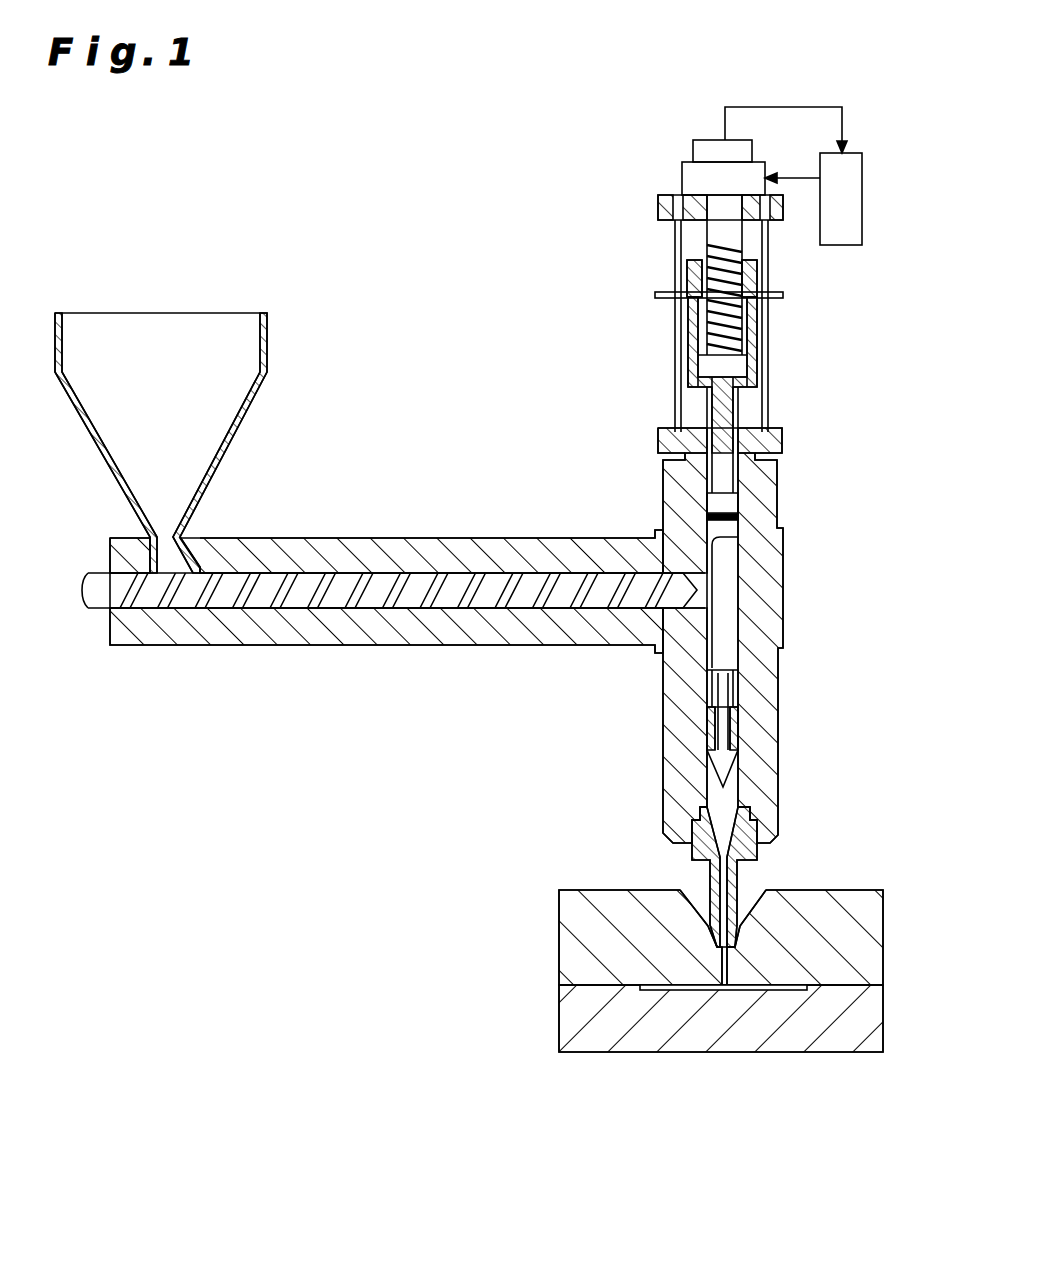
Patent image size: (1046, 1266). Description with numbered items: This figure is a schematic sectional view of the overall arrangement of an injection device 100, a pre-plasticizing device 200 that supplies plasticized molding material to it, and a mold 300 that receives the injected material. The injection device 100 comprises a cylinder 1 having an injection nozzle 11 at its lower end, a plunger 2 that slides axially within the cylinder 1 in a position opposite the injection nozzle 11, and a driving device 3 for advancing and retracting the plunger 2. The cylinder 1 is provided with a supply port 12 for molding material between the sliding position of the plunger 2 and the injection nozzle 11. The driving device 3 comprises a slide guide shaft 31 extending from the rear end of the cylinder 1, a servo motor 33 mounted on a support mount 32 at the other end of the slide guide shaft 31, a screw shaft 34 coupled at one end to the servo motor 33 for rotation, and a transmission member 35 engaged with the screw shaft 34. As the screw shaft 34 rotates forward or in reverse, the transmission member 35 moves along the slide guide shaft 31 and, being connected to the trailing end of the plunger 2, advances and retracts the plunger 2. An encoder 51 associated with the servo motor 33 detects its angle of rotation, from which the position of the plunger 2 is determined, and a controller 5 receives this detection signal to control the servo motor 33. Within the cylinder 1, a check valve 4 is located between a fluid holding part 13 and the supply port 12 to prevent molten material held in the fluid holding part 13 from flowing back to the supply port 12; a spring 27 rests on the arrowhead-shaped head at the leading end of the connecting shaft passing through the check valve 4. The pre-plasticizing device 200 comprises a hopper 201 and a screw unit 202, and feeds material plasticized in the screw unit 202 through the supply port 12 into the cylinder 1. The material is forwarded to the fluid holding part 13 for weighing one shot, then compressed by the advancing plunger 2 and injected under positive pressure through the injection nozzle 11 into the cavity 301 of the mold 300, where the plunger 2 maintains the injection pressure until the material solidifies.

The cylinder 1 is at (683, 737).
The plunger 2 is at (742, 614).
The driving device 3 is at (660, 176).
The check valve 4 is at (742, 684).
The controller 5 is at (845, 198).
The injection nozzle 11 is at (738, 893).
The supply port 12 is at (662, 520).
The fluid holding part 13 is at (747, 803).
The spring 27 is at (750, 736).
The slide guide shaft 31 is at (688, 347).
The support mount 32 is at (660, 205).
The servo motor 33 is at (758, 173).
The screw shaft 34 is at (742, 252).
The transmission member 35 is at (752, 285).
The encoder 51 is at (705, 148).
The injection device 100 is at (655, 497).
The pre-plasticizing device 200 is at (305, 535).
The hopper 201 is at (242, 345).
The screw unit 202 is at (408, 555).
The mold 300 is at (566, 885).
The cavity 301 is at (671, 990).